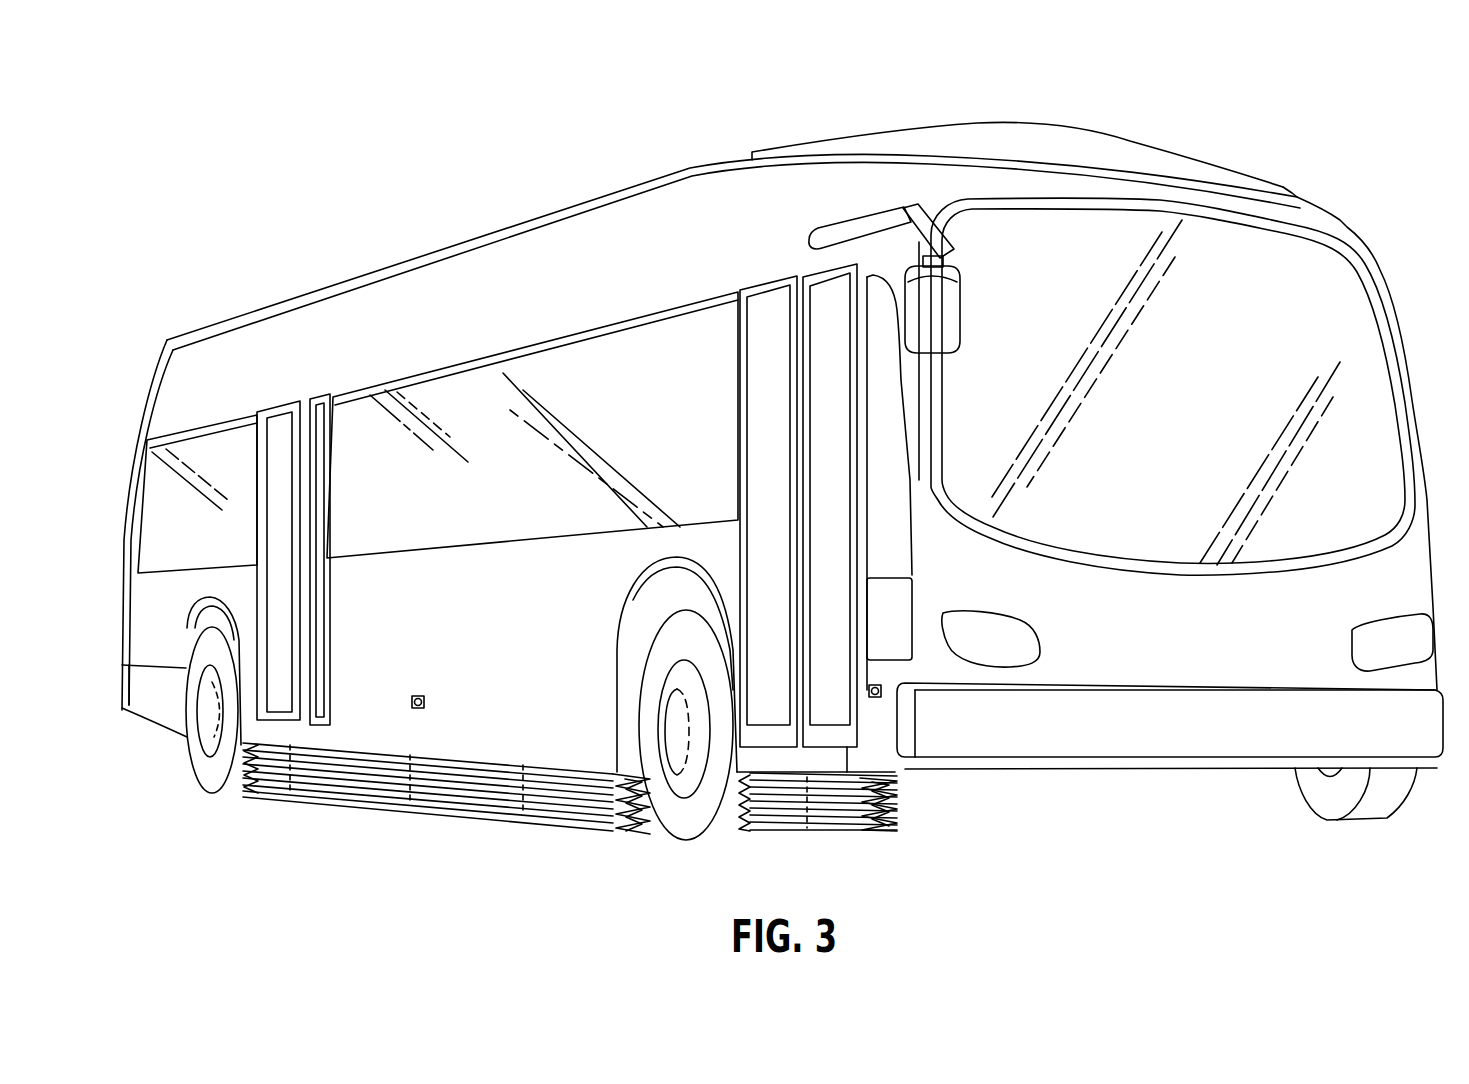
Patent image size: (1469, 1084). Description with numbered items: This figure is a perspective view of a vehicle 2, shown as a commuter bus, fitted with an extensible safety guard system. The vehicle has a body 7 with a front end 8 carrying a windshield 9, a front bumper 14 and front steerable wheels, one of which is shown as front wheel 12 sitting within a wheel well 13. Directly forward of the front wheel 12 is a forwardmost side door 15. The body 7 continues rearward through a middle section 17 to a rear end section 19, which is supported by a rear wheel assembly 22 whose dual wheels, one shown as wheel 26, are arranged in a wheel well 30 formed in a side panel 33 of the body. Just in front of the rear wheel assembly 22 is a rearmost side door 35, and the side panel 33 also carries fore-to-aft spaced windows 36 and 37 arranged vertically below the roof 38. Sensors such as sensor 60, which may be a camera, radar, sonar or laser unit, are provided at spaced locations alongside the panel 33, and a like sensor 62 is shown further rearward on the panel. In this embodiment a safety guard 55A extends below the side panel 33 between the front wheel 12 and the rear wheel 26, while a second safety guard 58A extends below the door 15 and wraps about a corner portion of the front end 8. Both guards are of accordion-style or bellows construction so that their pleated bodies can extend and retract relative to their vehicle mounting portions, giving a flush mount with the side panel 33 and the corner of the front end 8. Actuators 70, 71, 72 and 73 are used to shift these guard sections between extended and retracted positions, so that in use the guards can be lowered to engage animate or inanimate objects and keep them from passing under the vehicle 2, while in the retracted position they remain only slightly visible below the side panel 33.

The vehicle 2 is at (1196, 103).
The roof 38 is at (693, 160).
The body 7 is at (519, 271).
The window 36 is at (458, 385).
The rearmost side door 35 is at (314, 458).
The window 37 is at (222, 452).
The windshield 9 is at (1355, 322).
The rear end section 19 is at (140, 600).
The wheel well 30 is at (199, 633).
The rear sensor 62 is at (418, 693).
The wheel well 13 is at (640, 608).
The side panel 33 is at (473, 719).
The front bumper 14 is at (1410, 708).
The rear wheel assembly 22 is at (224, 761).
The dual wheel 26 is at (230, 770).
The actuator 73 is at (302, 772).
The middle section 17 is at (446, 815).
The actuator 72 is at (404, 775).
The actuator 71 is at (518, 777).
The safety guard 55A is at (567, 815).
The front steerable wheel 12 is at (692, 825).
The forwardmost side door 15 is at (823, 824).
The actuator 70 is at (802, 777).
The safety guard 58A is at (836, 835).
The front end 8 is at (872, 758).
The sensor 60 is at (883, 698).